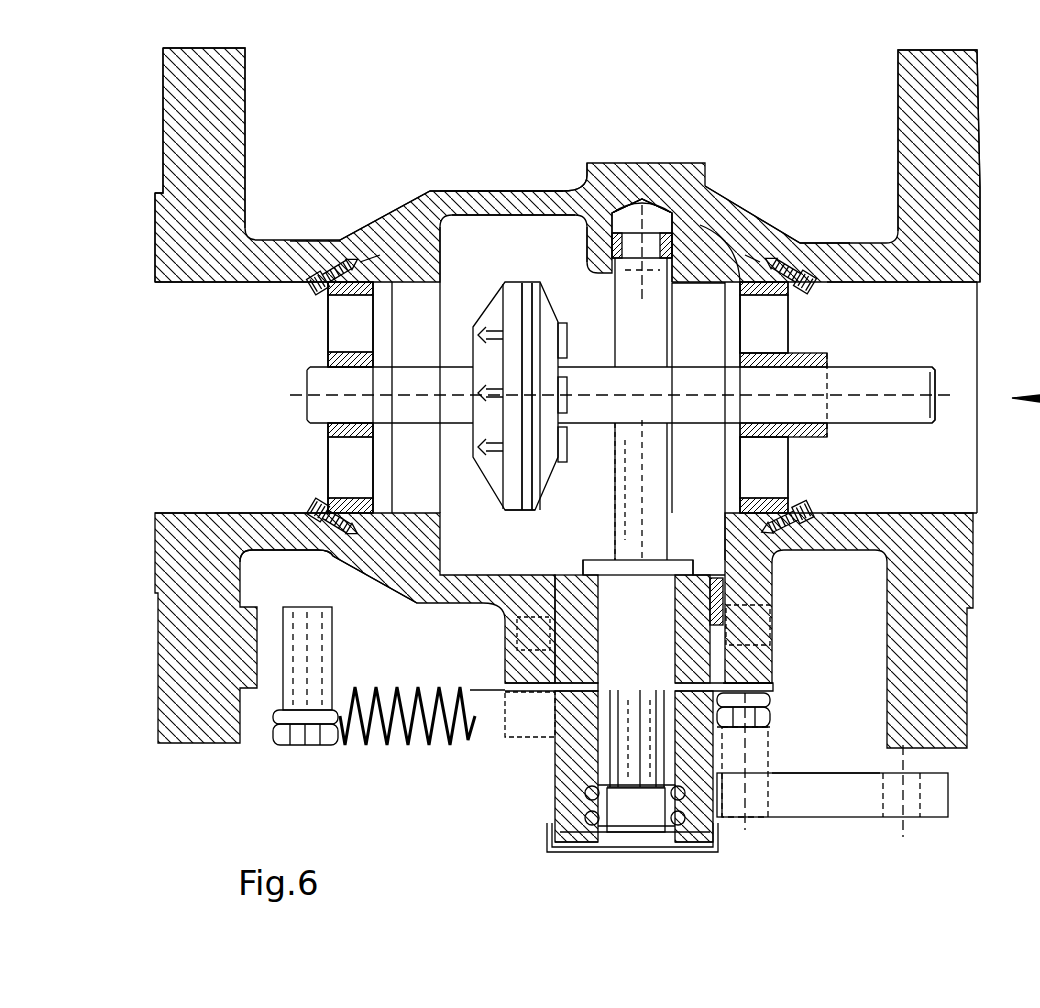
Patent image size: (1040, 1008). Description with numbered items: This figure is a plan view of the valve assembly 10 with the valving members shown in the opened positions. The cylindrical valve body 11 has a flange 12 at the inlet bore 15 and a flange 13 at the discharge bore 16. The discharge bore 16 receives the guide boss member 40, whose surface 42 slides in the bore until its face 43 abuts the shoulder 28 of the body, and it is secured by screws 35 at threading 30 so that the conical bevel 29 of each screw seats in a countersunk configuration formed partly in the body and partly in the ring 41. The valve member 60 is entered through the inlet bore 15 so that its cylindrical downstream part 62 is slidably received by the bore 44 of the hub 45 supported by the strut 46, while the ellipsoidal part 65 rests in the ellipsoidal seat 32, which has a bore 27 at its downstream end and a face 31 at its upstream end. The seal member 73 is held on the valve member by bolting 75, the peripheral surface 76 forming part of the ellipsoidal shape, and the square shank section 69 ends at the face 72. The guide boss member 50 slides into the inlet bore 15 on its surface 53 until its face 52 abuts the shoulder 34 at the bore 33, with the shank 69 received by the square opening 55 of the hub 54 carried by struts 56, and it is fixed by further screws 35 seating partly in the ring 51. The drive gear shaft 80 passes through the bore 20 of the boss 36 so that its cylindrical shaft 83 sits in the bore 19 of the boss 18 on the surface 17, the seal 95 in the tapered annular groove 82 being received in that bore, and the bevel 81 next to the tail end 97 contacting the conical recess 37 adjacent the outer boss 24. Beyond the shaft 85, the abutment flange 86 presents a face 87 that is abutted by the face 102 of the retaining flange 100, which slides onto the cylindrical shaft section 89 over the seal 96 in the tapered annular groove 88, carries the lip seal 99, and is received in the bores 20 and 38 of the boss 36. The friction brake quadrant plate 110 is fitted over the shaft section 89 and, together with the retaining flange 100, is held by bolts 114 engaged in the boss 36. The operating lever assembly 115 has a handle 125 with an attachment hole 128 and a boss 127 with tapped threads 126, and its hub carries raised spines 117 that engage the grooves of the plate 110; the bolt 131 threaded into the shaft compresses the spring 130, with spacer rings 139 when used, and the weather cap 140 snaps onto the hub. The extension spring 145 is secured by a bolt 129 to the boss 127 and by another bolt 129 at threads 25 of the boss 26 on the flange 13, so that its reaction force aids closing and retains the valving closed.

The valve assembly 10 is at (493, 140).
The valve body 11 is at (493, 188).
The flange 12 is at (958, 130).
The flange 13 is at (170, 130).
The inlet bore 15 is at (960, 285).
The discharge bore 16 is at (213, 285).
The surface 17 is at (540, 216).
The boss 18 is at (587, 256).
The bore 19 is at (605, 170).
The bore 20 is at (725, 530).
The outer boss 24 is at (642, 200).
The threads 25 is at (300, 607).
The boss 26 is at (345, 585).
The bore 27 is at (385, 296).
The shoulder 28 is at (396, 228).
The conical bevel 29 is at (322, 272).
The threading 30 is at (350, 265).
The face 31 is at (440, 250).
The ellipsoidal seat 32 is at (440, 296).
The bore 33 is at (740, 278).
The shoulder 34 is at (775, 292).
The screws 35 is at (312, 290).
The boss 36 is at (505, 625).
The conical recess 37 is at (650, 203).
The bore 38 is at (772, 615).
The guide boss member 40 is at (319, 397).
The ring 41 is at (362, 500).
The surface 42 is at (345, 290).
The face 43 is at (365, 296).
The bore 44 is at (338, 423).
The hub 45 is at (330, 346).
The strut 46 is at (328, 332).
The guide boss member 50 is at (804, 397).
The ring 51 is at (778, 506).
The face 52 is at (727, 490).
The surface 53 is at (728, 508).
The hub 54 is at (828, 430).
The square opening 55 is at (826, 362).
The struts 56 is at (790, 340).
The valve member 60 is at (496, 396).
The cylindrical downstream part 62 is at (432, 375).
The ellipsoidal part 65 is at (522, 290).
The square shank section 69 is at (890, 365).
The face 72 is at (937, 393).
The seal member 73 is at (522, 510).
The bolting 75 is at (570, 313).
The peripheral surface 76 is at (540, 283).
The drive gear shaft 80 is at (660, 352).
The bevel 81 is at (672, 262).
The tapered annular groove 82 is at (700, 275).
The cylindrical shaft 83 is at (665, 320).
The shaft 85 is at (620, 468).
The abutment flange 86 is at (610, 560).
The face 87 is at (735, 565).
The tapered annular groove 88 is at (642, 565).
The cylindrical shaft section 89 is at (762, 640).
The seal 95 is at (570, 193).
The seal 96 is at (680, 655).
The tail end 97 is at (632, 210).
The seal 99 is at (560, 582).
The retaining flange 100 is at (492, 690).
The face 102 is at (583, 565).
The friction brake quadrant plate 110 is at (777, 684).
The bolts 114 is at (530, 738).
The operating lever assembly 115 is at (553, 784).
The raised spines 117 is at (565, 690).
The handle 125 is at (855, 752).
The tapped threads 126 is at (762, 790).
The boss 127 is at (770, 745).
The attachment hole 128 is at (903, 775).
The bolt 129 is at (287, 747).
The spring 130 is at (586, 797).
The bolt 131 is at (620, 820).
The spacer rings 139 is at (647, 822).
The weather cap 140 is at (722, 848).
The extension spring 145 is at (395, 757).